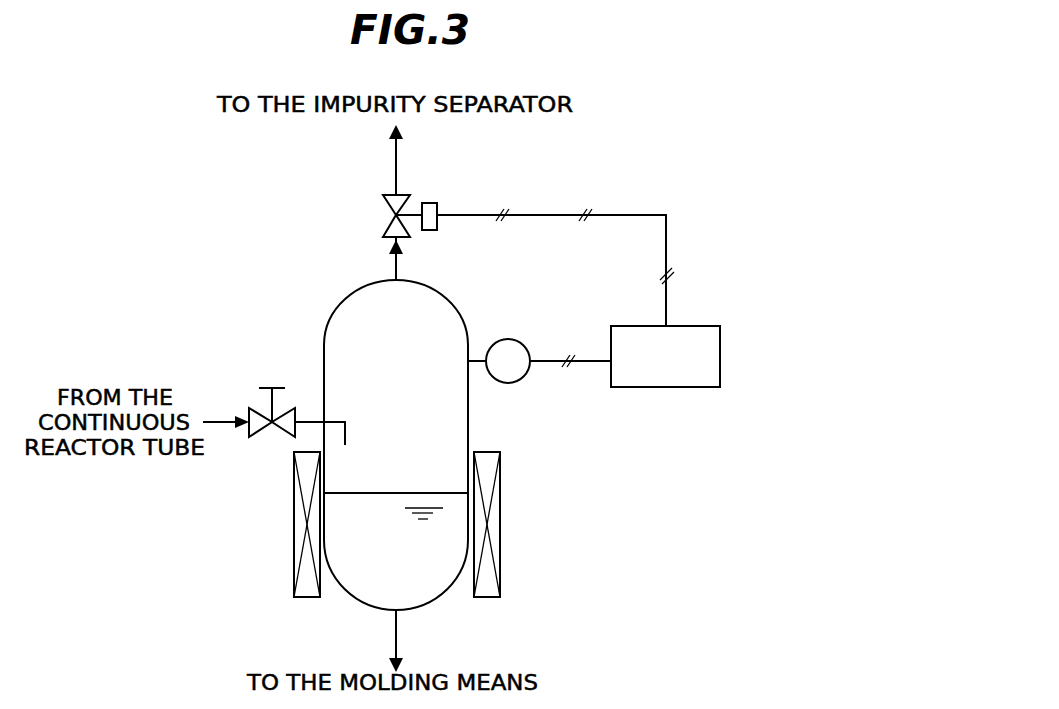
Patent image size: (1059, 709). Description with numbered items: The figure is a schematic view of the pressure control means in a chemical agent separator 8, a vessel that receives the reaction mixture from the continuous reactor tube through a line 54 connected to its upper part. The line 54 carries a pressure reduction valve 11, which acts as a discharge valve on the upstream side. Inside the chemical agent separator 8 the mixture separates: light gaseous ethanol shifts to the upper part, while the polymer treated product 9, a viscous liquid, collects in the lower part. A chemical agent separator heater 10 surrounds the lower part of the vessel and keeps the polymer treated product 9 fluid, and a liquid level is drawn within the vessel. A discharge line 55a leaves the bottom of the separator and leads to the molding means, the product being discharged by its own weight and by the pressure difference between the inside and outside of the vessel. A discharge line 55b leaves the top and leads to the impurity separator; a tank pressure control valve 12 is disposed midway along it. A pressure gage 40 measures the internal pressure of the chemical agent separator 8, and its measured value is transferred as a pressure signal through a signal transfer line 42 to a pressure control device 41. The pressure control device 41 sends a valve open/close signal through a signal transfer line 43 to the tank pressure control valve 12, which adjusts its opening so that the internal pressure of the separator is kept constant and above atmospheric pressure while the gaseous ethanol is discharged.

The chemical agent separator 8 is at (310, 417).
The polymer treated product 9 is at (525, 578).
The chemical agent separator heater 10 is at (546, 524).
The pressure reduction valve 11 is at (173, 474).
The tank pressure control valve 12 is at (305, 186).
The pressure gage 40 is at (523, 378).
The pressure control device 41 is at (738, 395).
The signal transfer line 42 is at (551, 304).
The signal transfer line 43 is at (667, 267).
The line 54 is at (305, 402).
The discharge line 55a is at (380, 639).
The discharge line 55b is at (412, 146).